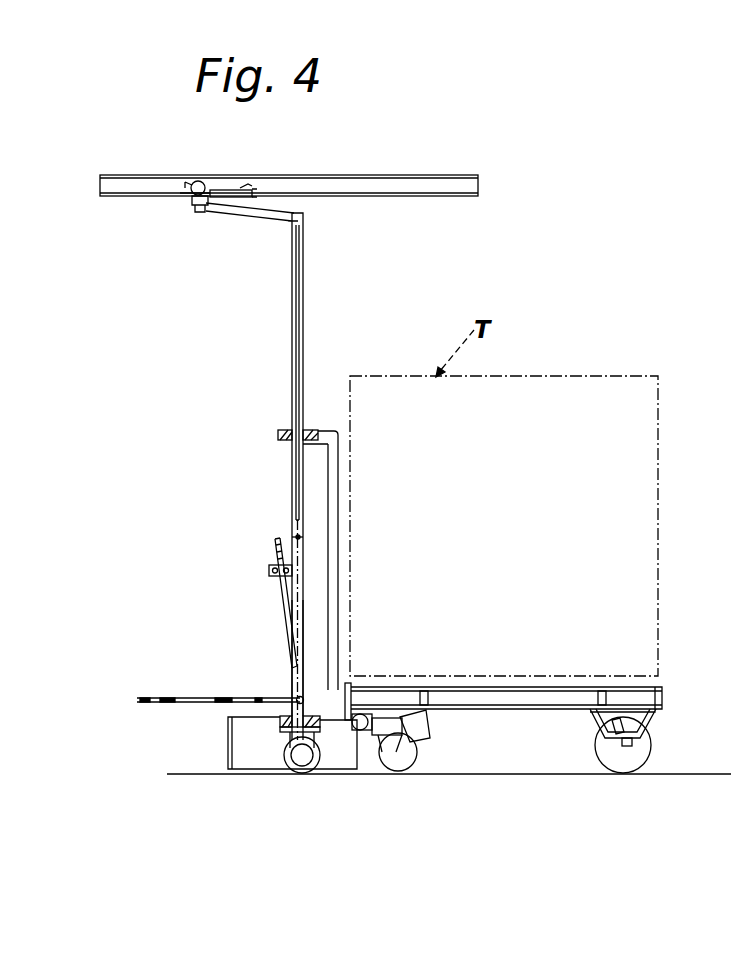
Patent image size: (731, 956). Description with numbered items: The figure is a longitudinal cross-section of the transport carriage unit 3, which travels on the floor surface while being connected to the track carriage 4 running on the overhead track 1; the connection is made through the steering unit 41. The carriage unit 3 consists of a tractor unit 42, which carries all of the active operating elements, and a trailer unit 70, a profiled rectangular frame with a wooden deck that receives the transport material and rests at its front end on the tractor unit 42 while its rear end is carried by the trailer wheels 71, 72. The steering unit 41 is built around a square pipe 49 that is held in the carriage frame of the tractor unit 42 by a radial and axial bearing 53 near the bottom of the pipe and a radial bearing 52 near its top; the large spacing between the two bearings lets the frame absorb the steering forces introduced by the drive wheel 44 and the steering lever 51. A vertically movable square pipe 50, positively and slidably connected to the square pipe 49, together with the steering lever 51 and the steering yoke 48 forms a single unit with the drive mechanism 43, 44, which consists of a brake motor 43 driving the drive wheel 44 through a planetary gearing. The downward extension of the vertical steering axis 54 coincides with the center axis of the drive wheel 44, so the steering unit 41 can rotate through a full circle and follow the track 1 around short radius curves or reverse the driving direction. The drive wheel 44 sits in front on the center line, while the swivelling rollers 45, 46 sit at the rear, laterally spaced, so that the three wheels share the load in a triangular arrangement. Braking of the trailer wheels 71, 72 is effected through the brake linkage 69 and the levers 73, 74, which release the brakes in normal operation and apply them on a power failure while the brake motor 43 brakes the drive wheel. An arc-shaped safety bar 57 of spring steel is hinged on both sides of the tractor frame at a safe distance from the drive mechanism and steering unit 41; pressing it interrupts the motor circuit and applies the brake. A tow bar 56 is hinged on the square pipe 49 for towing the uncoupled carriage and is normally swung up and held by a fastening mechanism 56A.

The track 1 is at (450, 174).
The transport carriage unit 3 is at (730, 655).
The track carriage 4 is at (195, 211).
The steering unit 41 is at (292, 492).
The tractor unit 42 is at (333, 512).
The brake motor 43 is at (307, 757).
The drive wheel 44 is at (282, 785).
The swivelling roller 45 is at (429, 774).
The swivelling roller 46 is at (410, 762).
The steering yoke 48 is at (287, 738).
The square pipe 49 is at (290, 612).
The vertically movable square pipe 50 is at (292, 311).
The steering lever 51 is at (273, 216).
The radial bearing 52 is at (277, 432).
The radial and axial bearing 53 is at (287, 715).
The vertical steering axis 54 is at (300, 536).
The tow bar 56 is at (283, 598).
The fastening mechanism 56A is at (268, 567).
The safety bar 57 is at (227, 740).
The brake linkage 69 is at (522, 722).
The trailer unit 70 is at (571, 684).
The trailer wheel 71 is at (655, 777).
The trailer wheel 72 is at (638, 758).
The lever 73 is at (671, 692).
The lever 74 is at (625, 718).